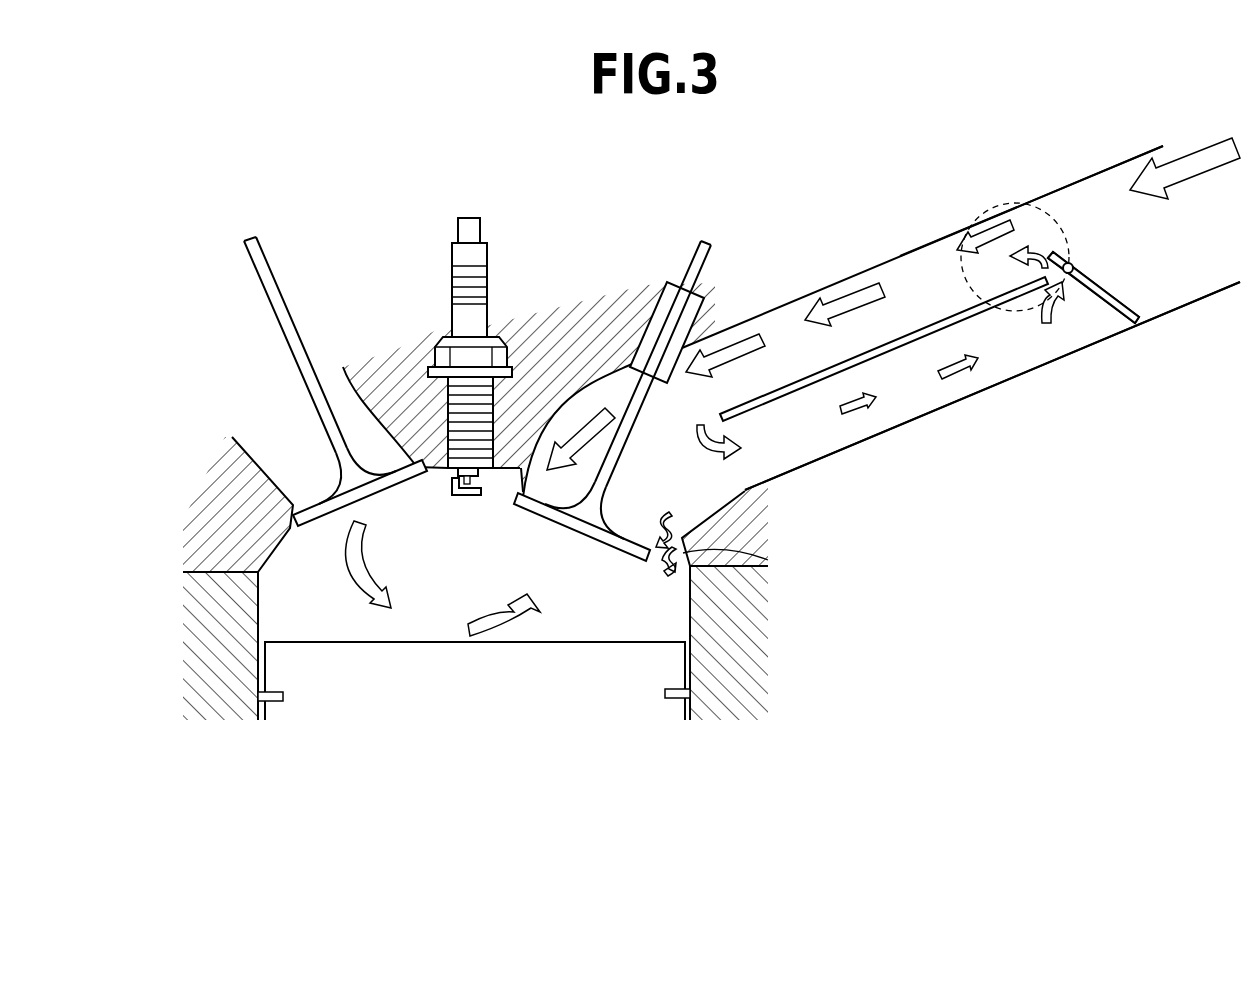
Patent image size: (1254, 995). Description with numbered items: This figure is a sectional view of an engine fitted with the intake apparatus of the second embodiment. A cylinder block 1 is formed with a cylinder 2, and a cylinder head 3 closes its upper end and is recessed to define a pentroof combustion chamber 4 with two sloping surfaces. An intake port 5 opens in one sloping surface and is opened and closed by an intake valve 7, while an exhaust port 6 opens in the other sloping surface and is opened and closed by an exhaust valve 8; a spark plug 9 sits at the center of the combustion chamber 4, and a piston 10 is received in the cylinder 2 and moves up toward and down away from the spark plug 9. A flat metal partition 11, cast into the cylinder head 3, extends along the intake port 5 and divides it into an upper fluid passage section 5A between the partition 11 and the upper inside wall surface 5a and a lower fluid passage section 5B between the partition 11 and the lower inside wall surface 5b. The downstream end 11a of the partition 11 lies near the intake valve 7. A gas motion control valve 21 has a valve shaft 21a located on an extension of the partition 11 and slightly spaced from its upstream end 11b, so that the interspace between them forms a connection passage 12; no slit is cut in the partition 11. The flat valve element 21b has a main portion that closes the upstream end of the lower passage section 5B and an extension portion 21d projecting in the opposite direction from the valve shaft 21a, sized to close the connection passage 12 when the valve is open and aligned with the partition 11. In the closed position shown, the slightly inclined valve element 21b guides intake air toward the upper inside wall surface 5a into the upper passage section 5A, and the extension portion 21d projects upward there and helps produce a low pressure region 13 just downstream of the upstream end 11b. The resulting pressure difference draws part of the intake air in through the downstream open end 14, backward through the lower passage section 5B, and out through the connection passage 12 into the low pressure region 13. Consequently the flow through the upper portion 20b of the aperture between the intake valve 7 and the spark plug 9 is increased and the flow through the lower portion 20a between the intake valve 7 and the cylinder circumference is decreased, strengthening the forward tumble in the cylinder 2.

The cylinder block 1 is at (223, 650).
The cylinder 2 is at (265, 603).
The cylinder head 3 is at (237, 503).
The combustion chamber 4 is at (418, 567).
The intake port 5 is at (893, 268).
The upper fluid passage section 5A is at (790, 337).
The lower fluid passage section 5B is at (865, 420).
The upper inside wall surface 5a is at (930, 249).
The lower inside wall surface 5b is at (950, 387).
The exhaust port 6 is at (358, 407).
The intake valve 7 is at (593, 527).
The exhaust valve 8 is at (293, 358).
The spark plug 9 is at (467, 498).
The piston 10 is at (667, 665).
The partition 11 is at (890, 353).
The downstream end of partition 11a is at (720, 413).
The upstream end of partition 11b is at (1042, 306).
The connection passage 12 is at (1077, 280).
The low pressure region 13 is at (972, 287).
The downstream open end of lower passage section 14 is at (732, 458).
The lower portion of the aperture 20a is at (762, 566).
The upper portion of the aperture 20b is at (522, 478).
The gas motion control valve 21 is at (1118, 278).
The valve shaft 21a is at (1073, 267).
The valve element 21b is at (1133, 307).
The extension portion 21d is at (1055, 257).